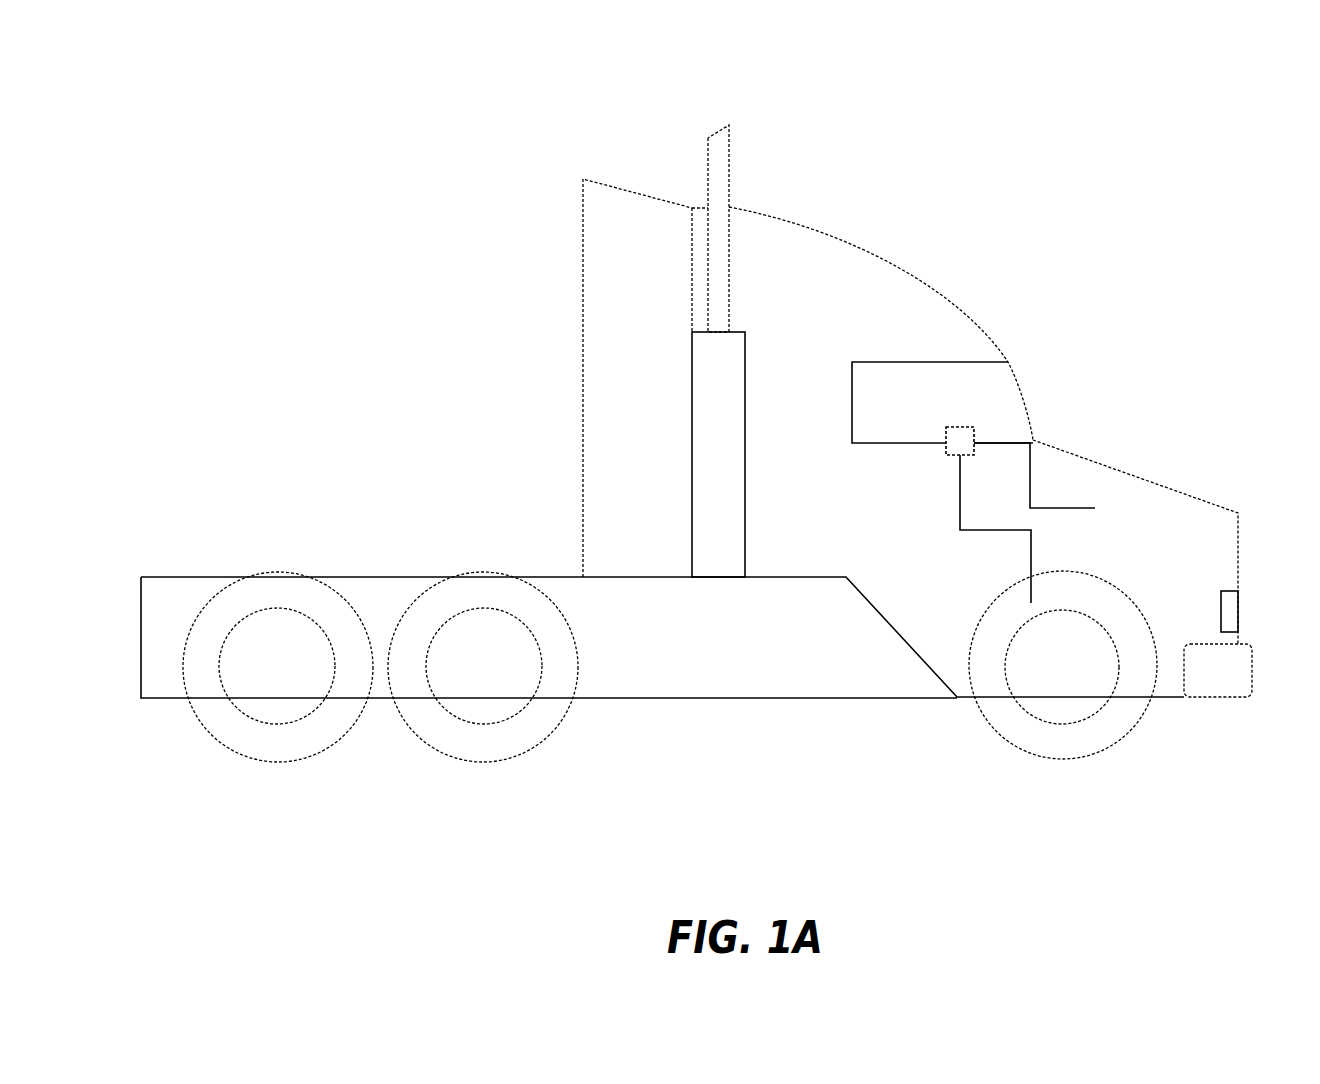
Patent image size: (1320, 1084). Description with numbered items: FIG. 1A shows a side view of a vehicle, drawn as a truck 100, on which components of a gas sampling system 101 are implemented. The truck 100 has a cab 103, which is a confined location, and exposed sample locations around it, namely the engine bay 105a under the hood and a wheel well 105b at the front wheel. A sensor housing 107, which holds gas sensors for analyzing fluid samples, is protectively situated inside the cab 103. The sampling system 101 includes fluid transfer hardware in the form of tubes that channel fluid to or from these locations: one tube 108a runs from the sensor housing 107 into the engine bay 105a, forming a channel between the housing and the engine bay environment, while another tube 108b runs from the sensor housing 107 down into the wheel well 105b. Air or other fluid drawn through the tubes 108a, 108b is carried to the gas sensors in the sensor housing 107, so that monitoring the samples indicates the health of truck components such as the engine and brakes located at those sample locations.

The truck 100 is at (205, 81).
The gas sampling system 101 is at (1078, 110).
The cab 103 is at (968, 385).
The engine bay 105a is at (1120, 472).
The wheel well 105b is at (1063, 593).
The sensor housing 107 is at (960, 425).
The tube 108a is at (1033, 472).
The tube 108b is at (1031, 553).